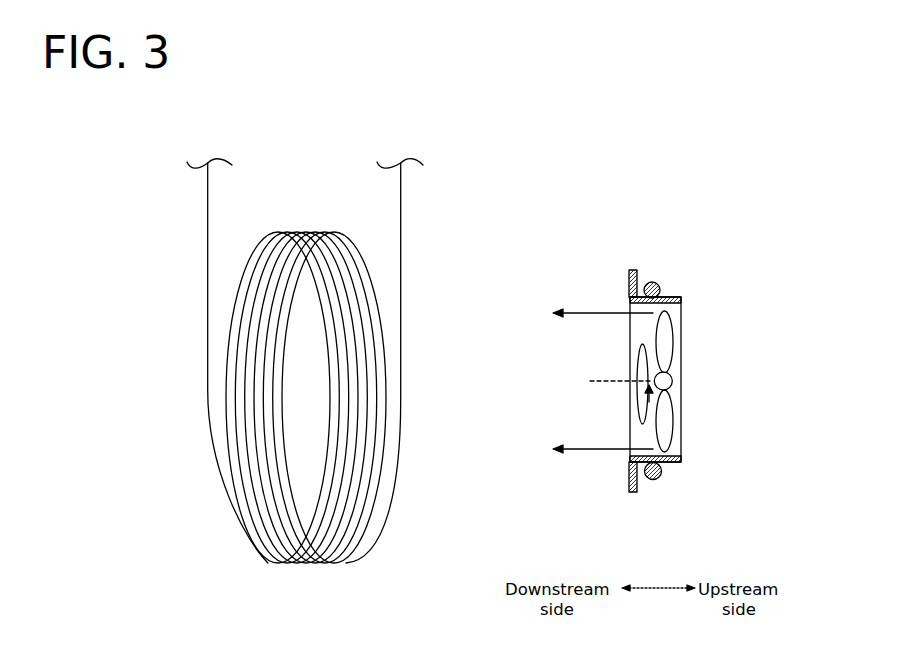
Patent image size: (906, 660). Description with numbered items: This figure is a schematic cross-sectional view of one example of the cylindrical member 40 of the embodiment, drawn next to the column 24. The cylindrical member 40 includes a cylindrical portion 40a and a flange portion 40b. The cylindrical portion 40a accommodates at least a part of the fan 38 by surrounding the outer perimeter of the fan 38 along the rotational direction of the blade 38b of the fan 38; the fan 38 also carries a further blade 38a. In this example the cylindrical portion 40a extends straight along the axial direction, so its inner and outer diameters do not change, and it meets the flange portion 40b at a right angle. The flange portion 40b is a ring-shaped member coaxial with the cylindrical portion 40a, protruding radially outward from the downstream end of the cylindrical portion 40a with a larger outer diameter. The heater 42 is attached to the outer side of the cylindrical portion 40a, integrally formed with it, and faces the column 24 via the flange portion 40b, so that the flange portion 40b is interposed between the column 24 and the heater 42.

The column 24 is at (238, 560).
The cylindrical member 40 is at (633, 351).
The cylindrical portion 40a is at (673, 298).
The flange portion 40b is at (635, 272).
The fan 38 is at (665, 370).
The fan blade (edge-on) 38a is at (607, 376).
The blade 38b is at (673, 320).
The heater 42 is at (658, 483).